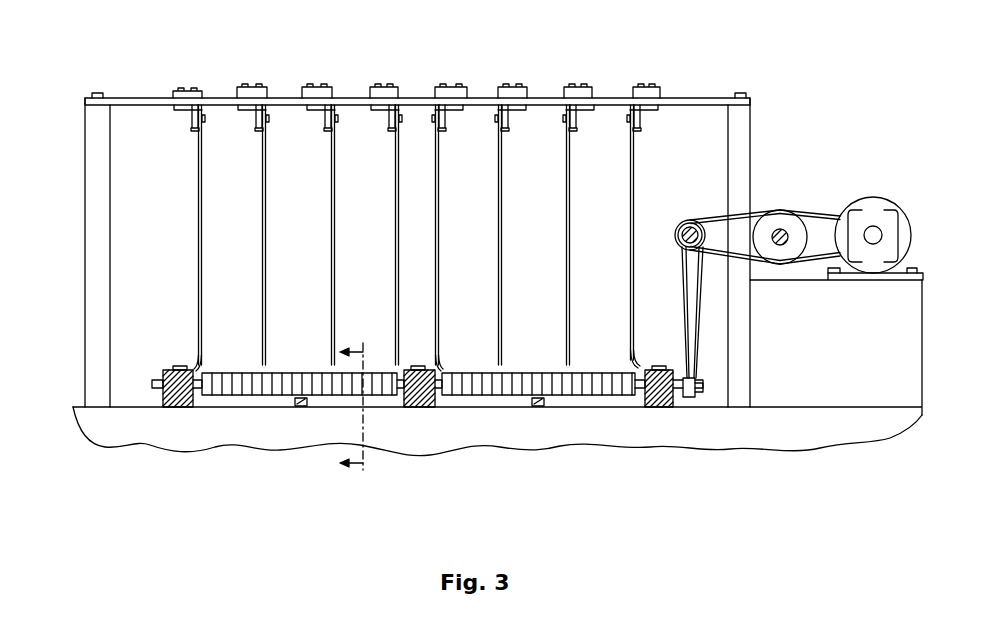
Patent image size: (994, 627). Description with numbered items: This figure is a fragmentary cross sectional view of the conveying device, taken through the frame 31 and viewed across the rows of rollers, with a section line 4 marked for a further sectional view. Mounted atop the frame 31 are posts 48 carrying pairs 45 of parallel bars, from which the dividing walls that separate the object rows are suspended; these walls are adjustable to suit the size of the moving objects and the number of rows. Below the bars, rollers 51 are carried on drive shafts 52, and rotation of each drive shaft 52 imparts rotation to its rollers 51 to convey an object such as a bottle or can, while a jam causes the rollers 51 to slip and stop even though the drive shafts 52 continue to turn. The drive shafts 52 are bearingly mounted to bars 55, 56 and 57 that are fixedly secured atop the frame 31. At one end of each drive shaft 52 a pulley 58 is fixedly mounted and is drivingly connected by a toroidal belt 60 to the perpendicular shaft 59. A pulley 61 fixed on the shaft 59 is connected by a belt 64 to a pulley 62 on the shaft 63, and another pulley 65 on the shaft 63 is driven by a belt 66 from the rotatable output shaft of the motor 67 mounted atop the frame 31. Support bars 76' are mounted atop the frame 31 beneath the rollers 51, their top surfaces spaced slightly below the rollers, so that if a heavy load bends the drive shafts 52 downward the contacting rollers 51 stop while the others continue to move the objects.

The frame 31 is at (132, 405).
The pairs of parallel bars 45 is at (287, 97).
The post 48 is at (85, 140).
The roller 51 is at (285, 374).
The drive shaft 52 is at (200, 372).
The bar 55 is at (172, 397).
The bar 56 is at (420, 398).
The bar 57 is at (655, 398).
The pulley 58 is at (700, 398).
The shaft 59 is at (690, 226).
The belt 60 is at (700, 320).
The pulley 61 is at (683, 222).
The pulley 62 is at (780, 214).
The shaft 63 is at (776, 247).
The belt 64 is at (738, 212).
The pulley 65 is at (793, 257).
The belt 66 is at (818, 208).
The motor 67 is at (885, 205).
The support bar 76' is at (386, 440).
The section line 4- 4 is at (361, 411).